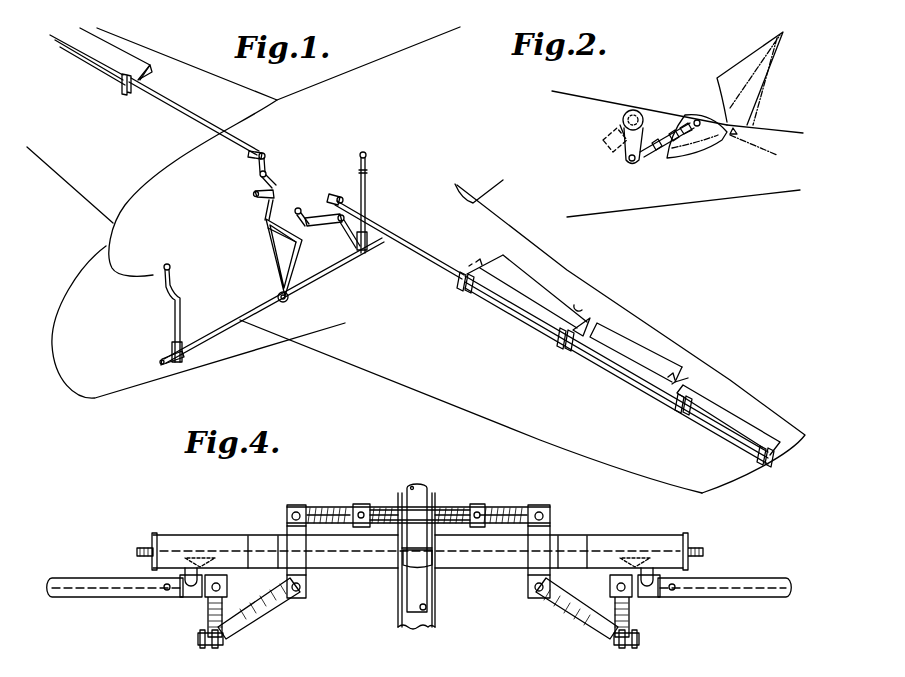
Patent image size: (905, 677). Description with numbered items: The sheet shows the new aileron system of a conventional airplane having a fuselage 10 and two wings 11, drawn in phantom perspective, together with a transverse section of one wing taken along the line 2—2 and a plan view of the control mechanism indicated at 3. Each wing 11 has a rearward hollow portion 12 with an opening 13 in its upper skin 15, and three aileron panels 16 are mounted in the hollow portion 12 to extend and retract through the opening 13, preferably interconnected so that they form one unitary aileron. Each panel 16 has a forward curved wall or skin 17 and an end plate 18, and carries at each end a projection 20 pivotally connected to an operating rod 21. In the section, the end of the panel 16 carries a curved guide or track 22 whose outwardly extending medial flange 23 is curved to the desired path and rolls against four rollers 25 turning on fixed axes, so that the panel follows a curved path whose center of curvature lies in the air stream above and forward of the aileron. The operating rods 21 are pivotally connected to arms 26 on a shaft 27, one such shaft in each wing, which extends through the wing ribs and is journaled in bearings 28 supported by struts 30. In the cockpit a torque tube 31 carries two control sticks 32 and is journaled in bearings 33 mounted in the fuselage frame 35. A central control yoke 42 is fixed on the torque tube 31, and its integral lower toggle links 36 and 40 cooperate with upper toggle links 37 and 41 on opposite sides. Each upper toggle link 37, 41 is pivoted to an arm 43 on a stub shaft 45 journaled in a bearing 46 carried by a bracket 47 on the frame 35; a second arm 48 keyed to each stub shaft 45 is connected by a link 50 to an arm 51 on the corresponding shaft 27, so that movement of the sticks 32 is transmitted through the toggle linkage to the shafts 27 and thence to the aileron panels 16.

In FIG. 1, the section line 2- 2 is at (460, 313).
In FIG. 1, the section line 3 is at (312, 200).
In FIG. 1, the fuselage 10 is at (100, 244).
In FIG. 1, the wing 11 is at (88, 185).
In FIG. 2, the wing 11 is at (780, 192).
In FIG. 2, the rearward hollow portion 12 is at (740, 175).
In FIG. 1, the opening 13 is at (588, 310).
In FIG. 2, the opening 13 is at (775, 130).
In FIG. 2, the upper skin 15 is at (598, 95).
In FIG. 1, the aileron panel 16 is at (150, 55).
In FIG. 2, the aileron panel 16 is at (677, 178).
In FIG. 1, the forward curved wall 17 is at (540, 310).
In FIG. 2, the forward curved wall 17 is at (700, 112).
In FIG. 1, the end plate 18 is at (560, 303).
In FIG. 2, the end plate 18 is at (750, 122).
In FIG. 1, the projection 20 is at (480, 265).
In FIG. 2, the projection 20 is at (687, 112).
In FIG. 1, the operating rod 21 is at (468, 268).
In FIG. 2, the operating rod 21 is at (665, 165).
In FIG. 2, the curved guide 22 is at (625, 162).
In FIG. 2, the medial flange 23 is at (610, 150).
In FIG. 2, the roller 25 is at (740, 136).
In FIG. 1, the arm 26 is at (462, 285).
In FIG. 2, the arm 26 is at (620, 127).
In FIG. 1, the shaft 27 is at (130, 95).
In FIG. 2, the shaft 27 is at (632, 108).
In FIG. 4, the shaft 27 is at (100, 578).
In FIG. 4, the bearing 28 is at (185, 600).
In FIG. 4, the strut 30 is at (190, 568).
In FIG. 1, the torque tube 31 is at (163, 355).
In FIG. 4, the torque tube 31 is at (410, 600).
In FIG. 1, the control stick 32 is at (365, 165).
In FIG. 4, the bearing 33 is at (415, 562).
In FIG. 4, the fuselage frame 35 is at (150, 550).
In FIG. 1, the lower toggle link 36 is at (270, 250).
In FIG. 1, the upper toggle link 37 is at (265, 220).
In FIG. 4, the upper toggle link 37 is at (365, 512).
In FIG. 1, the lower toggle link 40 is at (295, 280).
In FIG. 1, the upper toggle link 41 is at (310, 265).
In FIG. 4, the upper toggle link 41 is at (478, 518).
In FIG. 1, the central control yoke 42 is at (275, 290).
In FIG. 4, the central control yoke 42 is at (445, 515).
In FIG. 1, the arm 43 is at (258, 197).
In FIG. 4, the arm 43 is at (325, 508).
In FIG. 1, the stub shaft 45 is at (298, 207).
In FIG. 4, the stub shaft 45 is at (295, 605).
In FIG. 4, the bearing 46 is at (290, 540).
In FIG. 4, the bracket 47 is at (250, 540).
In FIG. 1, the second arm 48 is at (258, 178).
In FIG. 4, the second arm 48 is at (260, 615).
In FIG. 1, the link 50 is at (258, 160).
In FIG. 4, the link 50 is at (215, 647).
In FIG. 1, the arm 51 is at (258, 150).
In FIG. 4, the arm 51 is at (210, 612).